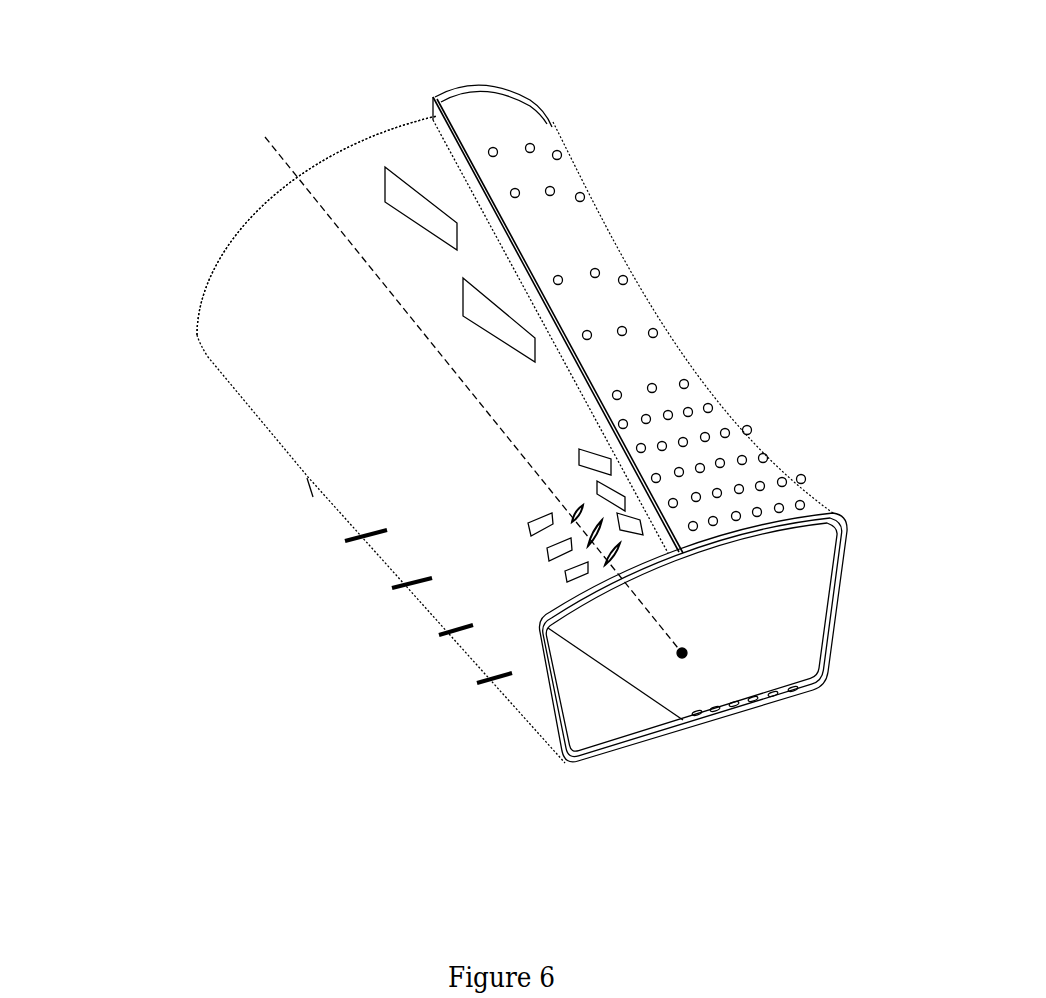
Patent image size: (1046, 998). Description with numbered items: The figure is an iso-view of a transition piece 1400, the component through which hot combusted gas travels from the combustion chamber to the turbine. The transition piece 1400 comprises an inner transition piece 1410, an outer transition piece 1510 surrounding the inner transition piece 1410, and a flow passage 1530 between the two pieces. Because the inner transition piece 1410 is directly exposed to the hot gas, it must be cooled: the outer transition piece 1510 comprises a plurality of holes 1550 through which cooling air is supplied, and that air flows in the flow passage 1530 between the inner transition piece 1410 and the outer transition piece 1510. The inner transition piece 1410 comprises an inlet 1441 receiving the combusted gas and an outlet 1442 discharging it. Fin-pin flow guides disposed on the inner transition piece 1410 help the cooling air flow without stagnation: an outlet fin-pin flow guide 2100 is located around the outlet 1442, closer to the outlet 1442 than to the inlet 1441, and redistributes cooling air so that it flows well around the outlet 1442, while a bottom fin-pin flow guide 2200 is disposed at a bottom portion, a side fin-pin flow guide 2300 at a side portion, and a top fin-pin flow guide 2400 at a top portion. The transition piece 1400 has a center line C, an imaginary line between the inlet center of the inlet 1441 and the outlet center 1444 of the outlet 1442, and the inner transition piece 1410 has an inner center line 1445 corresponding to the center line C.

The transition piece 1400 is at (105, 93).
The inner transition piece 1410 is at (222, 305).
The inlet 1441 is at (258, 214).
The outlet 1442 is at (782, 666).
The outlet center 1444 is at (683, 662).
The inner center line 1445 is at (492, 218).
The outer transition piece 1510 is at (497, 122).
The flow passage 1530 is at (432, 110).
The holes 1550 is at (628, 328).
The outlet fin-pin flow guide 2100 is at (600, 464).
The bottom fin-pin flow guide 2200 is at (407, 607).
The side fin-pin flow guide 2300 is at (443, 634).
The top fin-pin flow guide 2400 is at (490, 310).